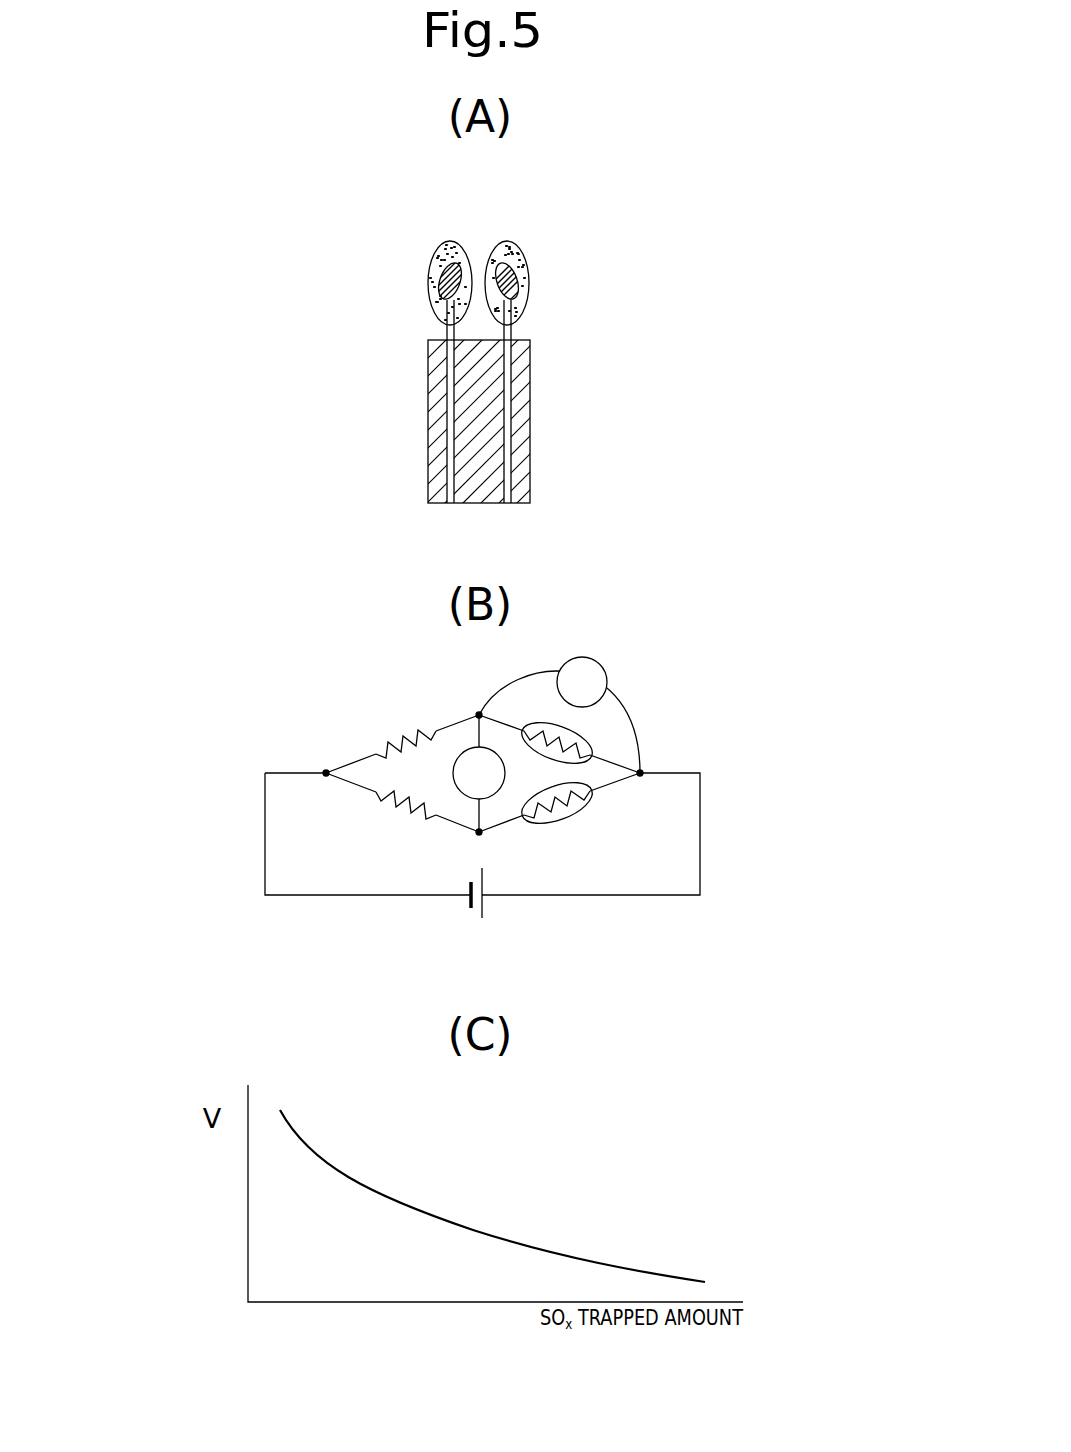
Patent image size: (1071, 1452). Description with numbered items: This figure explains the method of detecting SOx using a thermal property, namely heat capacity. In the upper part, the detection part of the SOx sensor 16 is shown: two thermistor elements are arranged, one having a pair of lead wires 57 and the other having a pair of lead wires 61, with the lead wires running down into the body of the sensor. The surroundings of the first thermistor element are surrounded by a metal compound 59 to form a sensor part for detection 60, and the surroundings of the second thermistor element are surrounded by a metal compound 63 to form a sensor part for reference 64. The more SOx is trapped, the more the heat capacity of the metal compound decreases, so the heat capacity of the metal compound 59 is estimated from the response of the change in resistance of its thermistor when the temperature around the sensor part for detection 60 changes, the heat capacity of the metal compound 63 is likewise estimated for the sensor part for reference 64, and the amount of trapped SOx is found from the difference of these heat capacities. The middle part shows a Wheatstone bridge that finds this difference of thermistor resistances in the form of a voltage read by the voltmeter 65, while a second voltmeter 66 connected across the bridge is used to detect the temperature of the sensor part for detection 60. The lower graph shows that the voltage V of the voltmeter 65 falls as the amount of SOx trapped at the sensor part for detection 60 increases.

The SOx sensor 16 is at (428, 442).
The pair of lead wires 57 is at (448, 373).
The metal compound 59 is at (438, 250).
The sensor part for detection 60 is at (457, 241).
The pair of lead wires 61 is at (511, 365).
The metal compound 63 is at (517, 252).
The sensor part for reference 64 is at (507, 241).
The voltmeter 65 is at (463, 750).
The voltmeter 66 is at (597, 660).